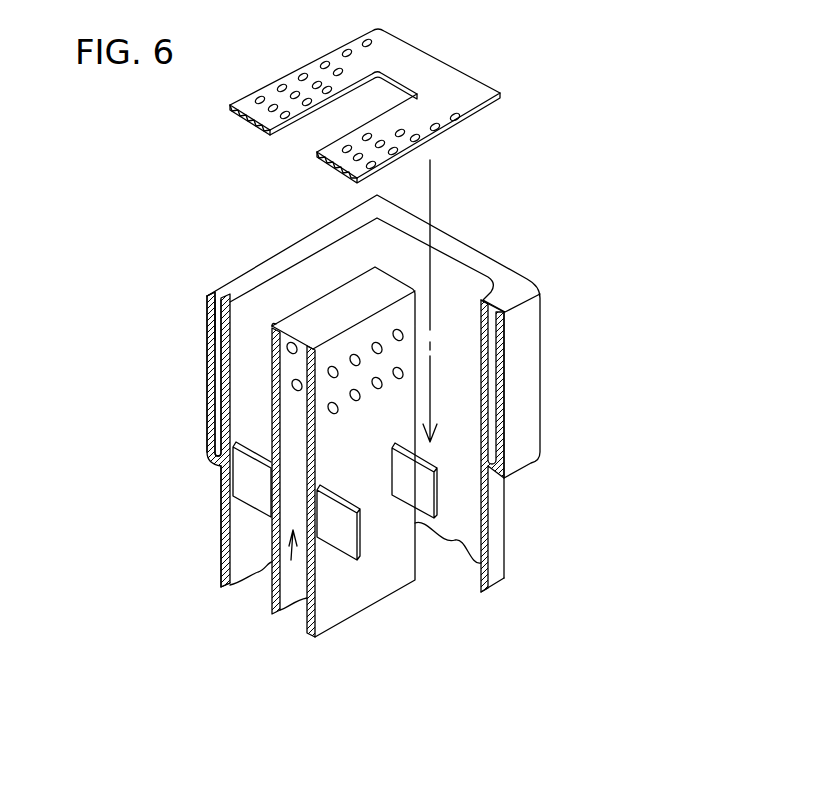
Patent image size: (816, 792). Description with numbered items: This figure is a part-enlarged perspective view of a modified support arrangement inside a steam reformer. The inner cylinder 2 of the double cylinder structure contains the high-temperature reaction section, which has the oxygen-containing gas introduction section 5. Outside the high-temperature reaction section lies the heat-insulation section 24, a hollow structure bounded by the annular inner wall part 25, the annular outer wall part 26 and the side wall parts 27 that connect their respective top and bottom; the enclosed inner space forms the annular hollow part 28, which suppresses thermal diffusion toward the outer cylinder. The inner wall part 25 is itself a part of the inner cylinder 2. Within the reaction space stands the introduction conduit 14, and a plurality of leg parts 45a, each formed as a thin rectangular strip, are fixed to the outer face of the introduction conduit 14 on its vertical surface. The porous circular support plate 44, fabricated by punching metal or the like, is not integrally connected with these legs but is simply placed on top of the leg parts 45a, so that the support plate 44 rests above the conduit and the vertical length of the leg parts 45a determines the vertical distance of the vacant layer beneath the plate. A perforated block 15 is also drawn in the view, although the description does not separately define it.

The support plate 44 is at (475, 78).
The side wall parts 27 is at (240, 278).
The heat-insulation section 24 is at (208, 307).
The inner wall part 25 is at (210, 343).
The annular hollow part 28 is at (219, 363).
The outer wall part 26 is at (207, 390).
The inner cylinder 2 is at (222, 545).
The perforated central block 15 is at (353, 393).
The introduction conduit 14 is at (284, 352).
The oxygen-containing gas introduction section 5 is at (291, 560).
The leg parts 45a is at (247, 490).